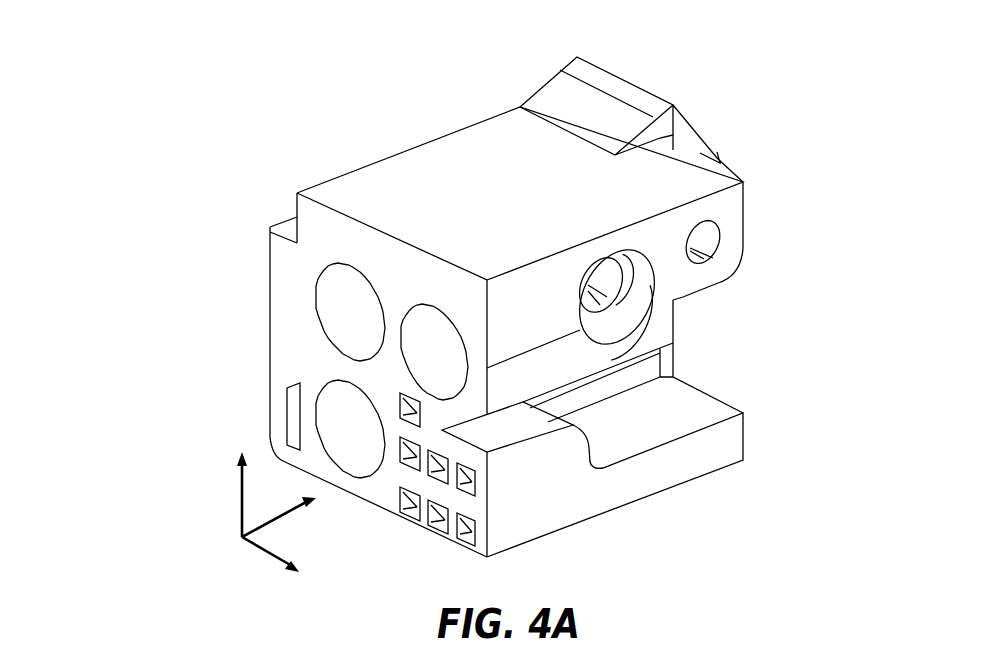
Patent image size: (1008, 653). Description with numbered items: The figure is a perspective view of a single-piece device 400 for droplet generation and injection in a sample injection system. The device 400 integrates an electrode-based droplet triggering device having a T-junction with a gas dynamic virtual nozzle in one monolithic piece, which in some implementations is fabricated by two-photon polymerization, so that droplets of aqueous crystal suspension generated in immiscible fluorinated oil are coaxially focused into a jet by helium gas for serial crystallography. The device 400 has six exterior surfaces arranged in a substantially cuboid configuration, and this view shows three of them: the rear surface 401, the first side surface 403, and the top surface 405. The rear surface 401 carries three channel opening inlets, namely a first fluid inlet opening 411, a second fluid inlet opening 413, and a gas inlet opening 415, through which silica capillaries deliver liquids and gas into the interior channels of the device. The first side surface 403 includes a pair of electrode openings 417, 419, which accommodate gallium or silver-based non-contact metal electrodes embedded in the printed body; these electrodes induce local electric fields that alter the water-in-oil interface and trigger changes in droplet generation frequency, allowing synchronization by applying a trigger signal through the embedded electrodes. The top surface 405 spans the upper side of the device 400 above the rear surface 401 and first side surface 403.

The single-piece device 400 is at (196, 94).
The rear surface 401 is at (283, 315).
The first side surface 403 is at (742, 213).
The top surface 405 is at (383, 173).
The first fluid inlet opening 411 is at (332, 283).
The second fluid inlet opening 413 is at (422, 363).
The gas inlet opening 415 is at (335, 412).
The electrode opening 417 is at (638, 292).
The electrode opening 419 is at (720, 242).